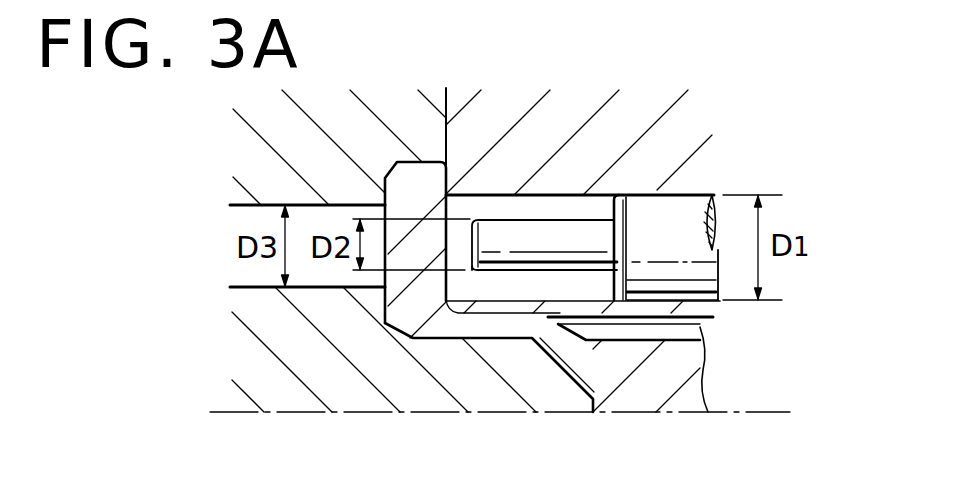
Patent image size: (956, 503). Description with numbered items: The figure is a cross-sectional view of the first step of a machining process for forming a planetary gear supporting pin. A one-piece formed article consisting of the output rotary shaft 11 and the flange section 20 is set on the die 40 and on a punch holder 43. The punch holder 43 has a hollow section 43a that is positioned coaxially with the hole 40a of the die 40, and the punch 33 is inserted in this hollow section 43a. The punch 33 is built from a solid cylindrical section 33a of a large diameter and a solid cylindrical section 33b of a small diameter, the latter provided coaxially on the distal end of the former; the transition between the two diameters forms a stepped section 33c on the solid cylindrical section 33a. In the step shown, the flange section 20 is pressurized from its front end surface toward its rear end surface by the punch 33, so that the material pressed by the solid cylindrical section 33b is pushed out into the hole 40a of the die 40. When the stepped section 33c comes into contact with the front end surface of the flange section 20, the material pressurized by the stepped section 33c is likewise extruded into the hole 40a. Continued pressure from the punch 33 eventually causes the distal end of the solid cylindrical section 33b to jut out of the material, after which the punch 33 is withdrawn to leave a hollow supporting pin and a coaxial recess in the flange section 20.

The output rotary shaft 11 is at (690, 388).
The flange section 20 is at (400, 175).
The punch 33 is at (720, 286).
The solid cylindrical section 33a is at (685, 206).
The solid cylindrical section 33b is at (502, 256).
The stepped section 33c is at (614, 207).
The die 40 is at (243, 163).
The hole 40a is at (247, 287).
The punch holder 43 is at (682, 148).
The hollow section 43a is at (495, 204).